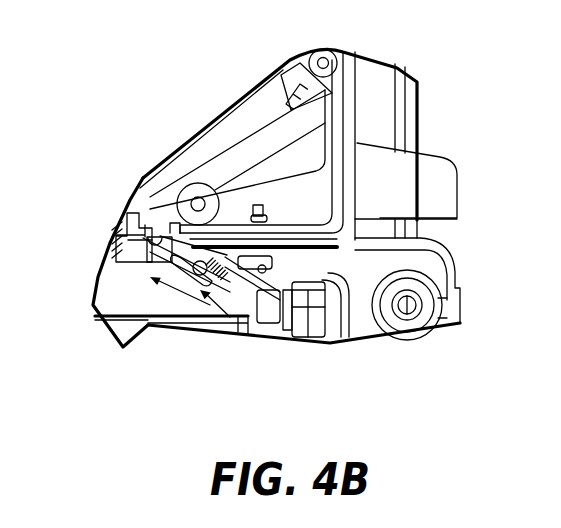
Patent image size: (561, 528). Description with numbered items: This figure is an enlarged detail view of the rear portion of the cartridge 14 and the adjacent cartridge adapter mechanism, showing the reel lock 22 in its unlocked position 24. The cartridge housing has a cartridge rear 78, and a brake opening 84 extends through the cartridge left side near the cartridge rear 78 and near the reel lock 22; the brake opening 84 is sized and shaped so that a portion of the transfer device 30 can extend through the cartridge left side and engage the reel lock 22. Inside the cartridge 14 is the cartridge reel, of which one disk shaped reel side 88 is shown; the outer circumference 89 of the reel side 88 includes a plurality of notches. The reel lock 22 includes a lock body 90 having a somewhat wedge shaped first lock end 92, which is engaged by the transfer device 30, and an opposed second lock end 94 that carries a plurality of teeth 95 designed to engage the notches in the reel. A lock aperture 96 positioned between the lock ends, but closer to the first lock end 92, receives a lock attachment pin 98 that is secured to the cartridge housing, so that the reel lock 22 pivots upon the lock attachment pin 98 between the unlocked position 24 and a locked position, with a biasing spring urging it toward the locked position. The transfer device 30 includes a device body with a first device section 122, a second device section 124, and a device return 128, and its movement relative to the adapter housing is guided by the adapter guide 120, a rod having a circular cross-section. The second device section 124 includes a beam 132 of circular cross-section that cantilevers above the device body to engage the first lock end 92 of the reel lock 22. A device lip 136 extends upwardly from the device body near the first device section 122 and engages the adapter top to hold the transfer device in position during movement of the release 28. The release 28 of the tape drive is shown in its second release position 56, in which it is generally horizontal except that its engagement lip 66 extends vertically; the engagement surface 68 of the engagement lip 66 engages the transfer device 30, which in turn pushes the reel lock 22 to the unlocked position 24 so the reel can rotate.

The cartridge 14 is at (366, 80).
The reel lock 22 is at (197, 296).
The unlocked position 24 is at (308, 196).
The release 28 is at (293, 303).
The transfer device 30 is at (196, 212).
The second release position 56 is at (303, 328).
The engagement lip 66 is at (324, 300).
The engagement surface 68 is at (277, 320).
The cartridge rear 78 is at (357, 118).
The brake opening 84 is at (113, 223).
The reel side 88 is at (243, 103).
The outer circumference 89 is at (302, 55).
The lock body 90 is at (262, 166).
The first lock end 92 is at (160, 217).
The second lock end 94 is at (322, 101).
The teeth 95 is at (284, 92).
The lock aperture 96 is at (198, 204).
The lock attachment pin 98 is at (150, 262).
The adapter guide 120 is at (172, 265).
The first device section 122 is at (242, 194).
The second device section 124 is at (153, 256).
The device return 128 is at (210, 226).
The beam 132 is at (150, 262).
The device lip 136 is at (273, 265).